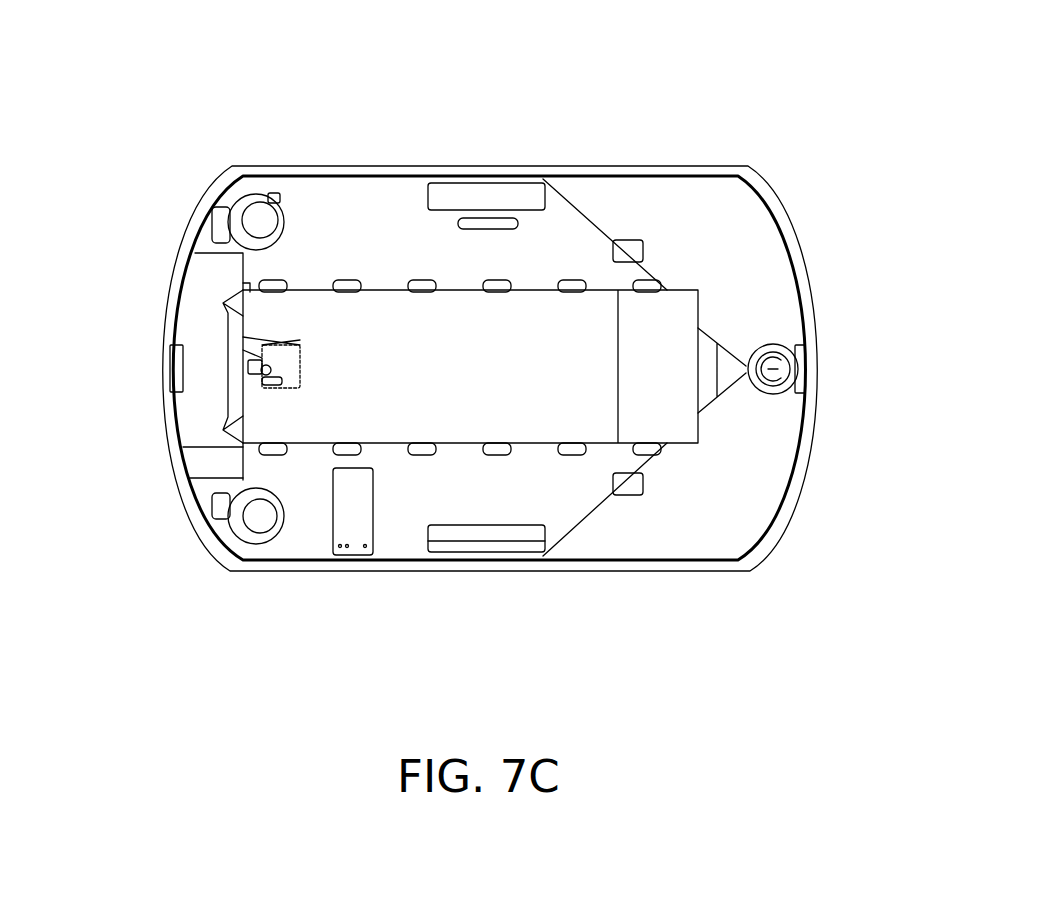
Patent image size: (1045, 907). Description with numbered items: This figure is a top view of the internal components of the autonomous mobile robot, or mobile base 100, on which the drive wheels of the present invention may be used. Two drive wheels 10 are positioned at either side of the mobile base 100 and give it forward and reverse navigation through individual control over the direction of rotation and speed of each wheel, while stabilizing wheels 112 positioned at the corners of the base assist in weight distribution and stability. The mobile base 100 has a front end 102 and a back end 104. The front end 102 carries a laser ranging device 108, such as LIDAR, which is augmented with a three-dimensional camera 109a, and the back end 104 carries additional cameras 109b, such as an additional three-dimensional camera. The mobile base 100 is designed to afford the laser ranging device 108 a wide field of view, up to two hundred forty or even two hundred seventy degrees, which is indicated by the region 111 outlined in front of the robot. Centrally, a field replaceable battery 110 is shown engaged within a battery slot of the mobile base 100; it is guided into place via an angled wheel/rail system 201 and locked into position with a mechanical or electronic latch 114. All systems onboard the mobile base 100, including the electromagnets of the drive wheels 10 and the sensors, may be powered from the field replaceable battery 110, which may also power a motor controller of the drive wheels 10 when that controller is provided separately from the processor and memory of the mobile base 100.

The mobile base 100 is at (280, 62).
The drive wheels 10 is at (520, 182).
The front end 102 is at (832, 373).
The back end 104 is at (150, 347).
The laser ranging device 108 is at (810, 405).
The 3D camera 109a is at (814, 353).
The additional cameras 109b is at (158, 357).
The field replaceable battery 110 is at (482, 371).
The region 111 is at (700, 235).
The stabilizing wheels 112 is at (228, 208).
The latch 114 is at (283, 358).
The angled wheel/rail system 201 is at (367, 452).